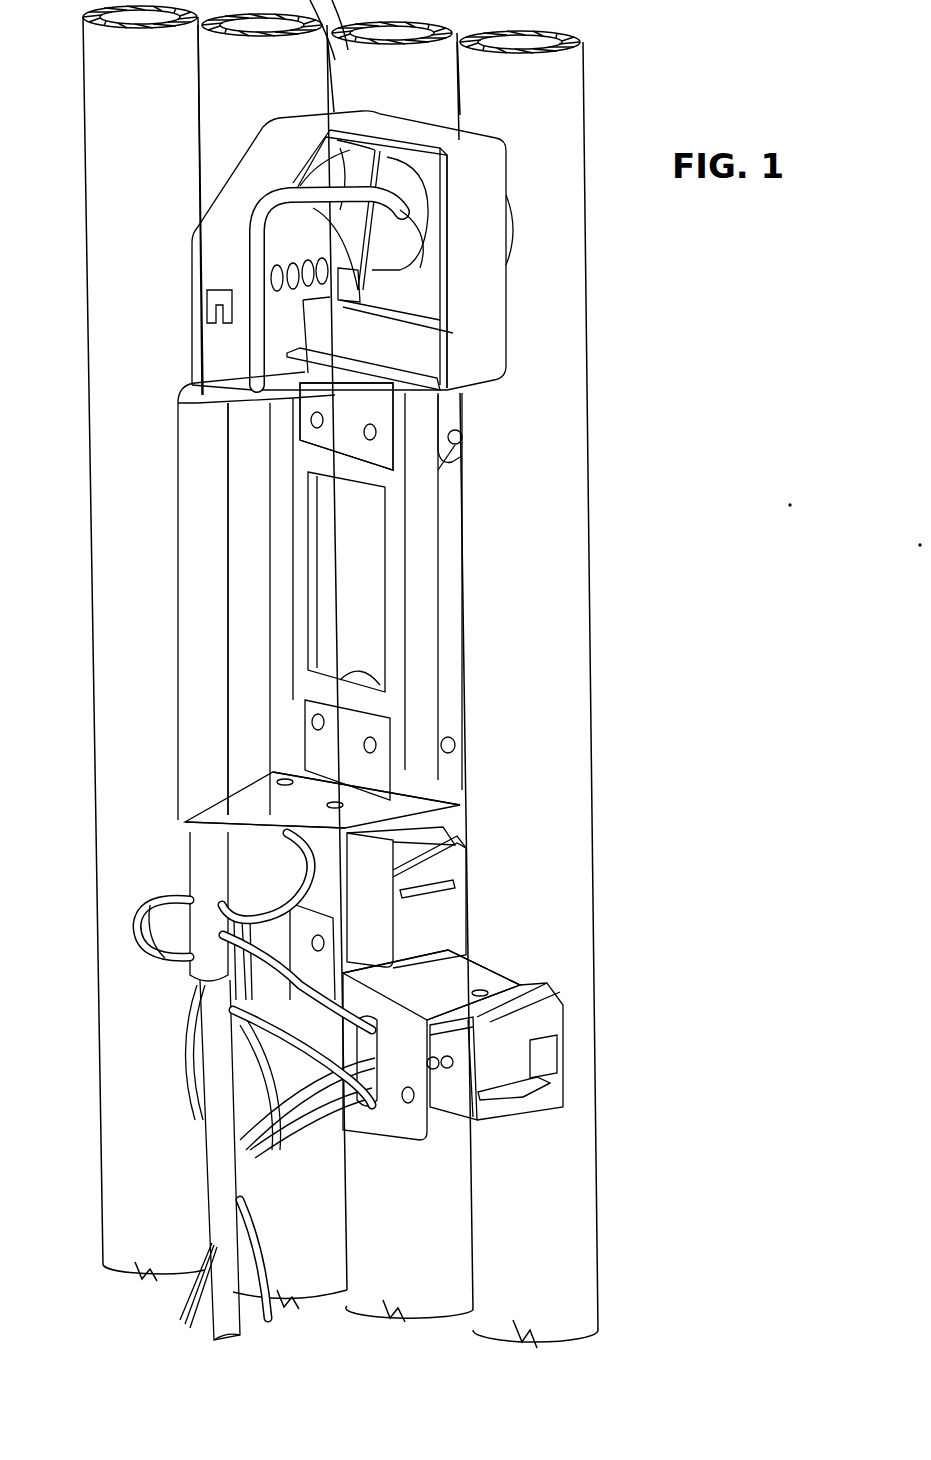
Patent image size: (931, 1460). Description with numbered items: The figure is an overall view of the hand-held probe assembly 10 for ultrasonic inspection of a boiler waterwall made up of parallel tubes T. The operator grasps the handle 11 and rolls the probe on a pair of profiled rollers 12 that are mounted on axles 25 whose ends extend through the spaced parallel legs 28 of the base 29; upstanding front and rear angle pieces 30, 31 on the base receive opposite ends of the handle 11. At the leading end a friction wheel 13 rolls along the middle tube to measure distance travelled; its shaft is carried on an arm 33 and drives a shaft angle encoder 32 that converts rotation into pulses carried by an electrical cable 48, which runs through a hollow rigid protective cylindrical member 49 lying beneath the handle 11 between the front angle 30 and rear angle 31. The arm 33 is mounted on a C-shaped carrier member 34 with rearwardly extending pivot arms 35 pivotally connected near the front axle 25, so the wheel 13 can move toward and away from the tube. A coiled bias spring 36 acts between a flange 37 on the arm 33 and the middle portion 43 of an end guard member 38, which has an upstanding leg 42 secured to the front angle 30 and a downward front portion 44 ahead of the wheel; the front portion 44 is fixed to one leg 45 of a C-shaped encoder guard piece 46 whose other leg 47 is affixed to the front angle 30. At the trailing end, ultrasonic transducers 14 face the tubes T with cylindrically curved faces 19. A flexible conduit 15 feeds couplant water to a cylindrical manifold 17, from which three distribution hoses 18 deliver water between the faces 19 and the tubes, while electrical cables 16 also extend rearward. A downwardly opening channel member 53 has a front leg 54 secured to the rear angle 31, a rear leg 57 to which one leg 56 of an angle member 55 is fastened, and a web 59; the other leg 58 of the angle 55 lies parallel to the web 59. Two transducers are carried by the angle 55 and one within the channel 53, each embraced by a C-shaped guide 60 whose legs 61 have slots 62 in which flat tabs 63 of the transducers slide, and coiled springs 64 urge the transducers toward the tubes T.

The tubes T is at (95, 48).
The probe assembly 10 is at (508, 588).
The handle 11 is at (185, 575).
The profiled rollers 12 is at (358, 665).
The friction wheel 13 is at (333, 168).
The ultrasonic transducers 14 is at (440, 830).
The flexible conduit 15 is at (212, 1215).
The electrical cables 16 is at (268, 1120).
The cylindrical header or manifold 17 is at (188, 858).
The distribution hoses 18 is at (280, 877).
The cylindrically curved faces 19 is at (445, 815).
The axles 25 is at (462, 444).
The spaced parallel legs 28 is at (458, 470).
The base 29 is at (378, 565).
The front angle piece 30 is at (185, 390).
The rear angle piece 31 is at (380, 458).
The shaft angle encoder 32 is at (432, 205).
The arm 33 is at (420, 300).
The C-shaped carrier member 34 is at (420, 322).
The pivot arms 35 is at (330, 305).
The coiled bias spring 36 is at (268, 262).
The flange 37 is at (355, 285).
The end guard member 38 is at (248, 160).
The upstanding leg 42 is at (295, 374).
The middle portion 43 is at (192, 281).
The front portion 44 is at (350, 115).
The leg of encoder guard piece 45 is at (427, 135).
The encoder guard piece 46 is at (534, 252).
The other leg of encoder guard piece 47 is at (390, 370).
The electrical cable 48 is at (293, 205).
The protective cylindrical member 49 is at (245, 630).
The channel member 53 is at (380, 920).
The front leg of channel 54 is at (367, 810).
The angle member 55 is at (402, 1120).
The leg of angle member 56 is at (520, 988).
The rear leg of channel 57 is at (380, 975).
The other leg of angle member 58 is at (368, 1115).
The web of channel 59 is at (330, 828).
The C-shaped guides 60 is at (505, 1110).
The legs of guide 61 is at (535, 1035).
The slots 62 is at (495, 1090).
The flat tabs 63 is at (540, 1095).
The coiled springs 64 is at (447, 1080).